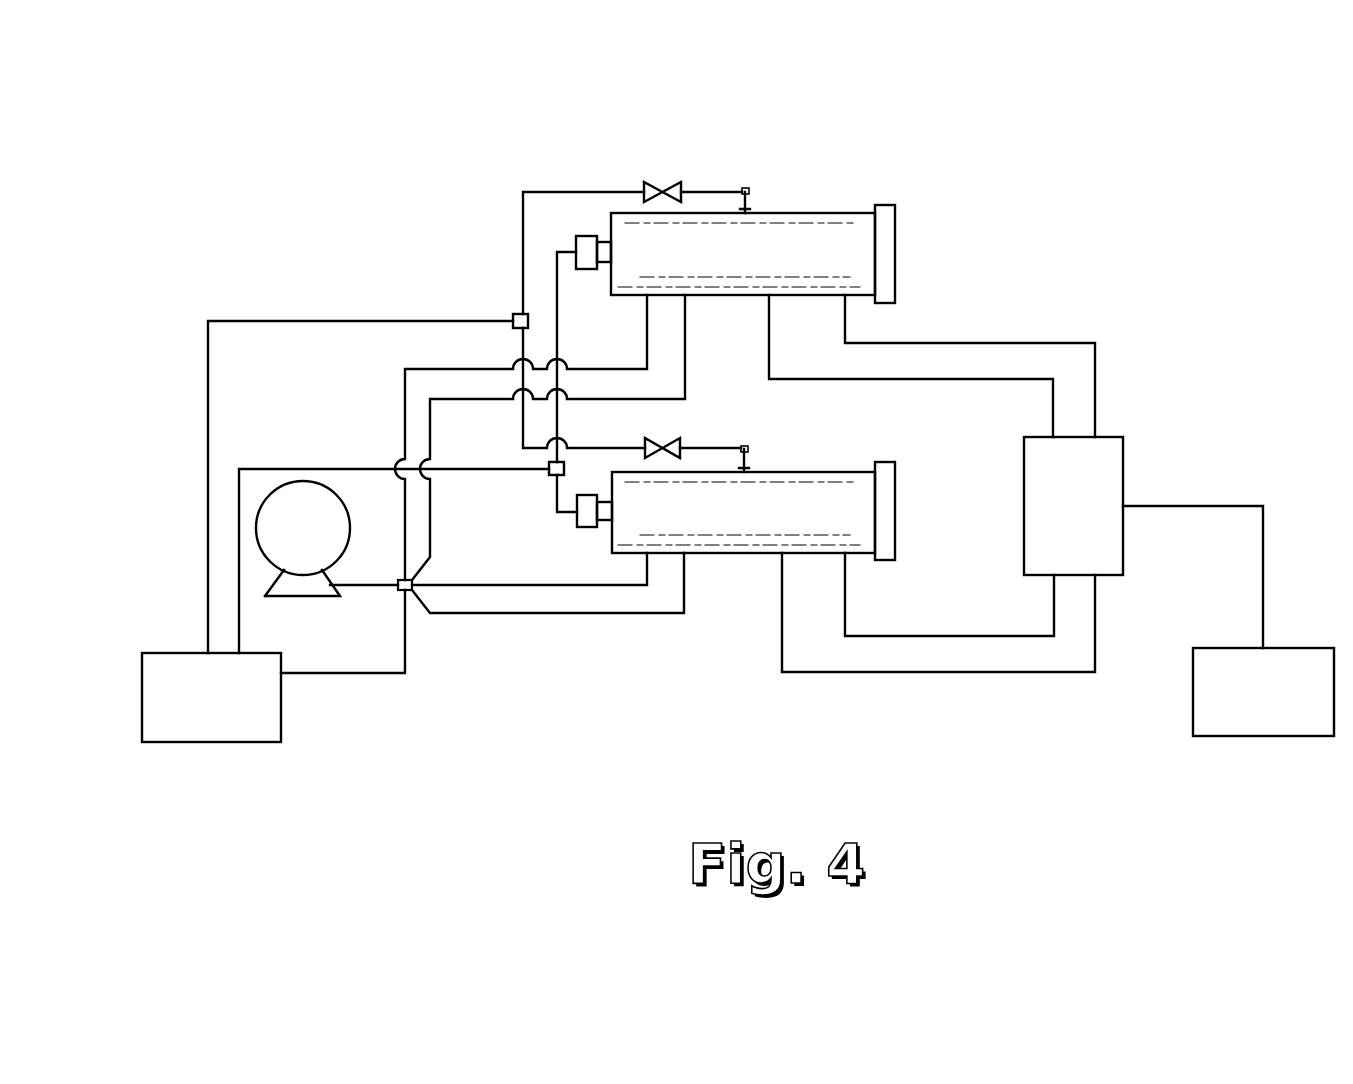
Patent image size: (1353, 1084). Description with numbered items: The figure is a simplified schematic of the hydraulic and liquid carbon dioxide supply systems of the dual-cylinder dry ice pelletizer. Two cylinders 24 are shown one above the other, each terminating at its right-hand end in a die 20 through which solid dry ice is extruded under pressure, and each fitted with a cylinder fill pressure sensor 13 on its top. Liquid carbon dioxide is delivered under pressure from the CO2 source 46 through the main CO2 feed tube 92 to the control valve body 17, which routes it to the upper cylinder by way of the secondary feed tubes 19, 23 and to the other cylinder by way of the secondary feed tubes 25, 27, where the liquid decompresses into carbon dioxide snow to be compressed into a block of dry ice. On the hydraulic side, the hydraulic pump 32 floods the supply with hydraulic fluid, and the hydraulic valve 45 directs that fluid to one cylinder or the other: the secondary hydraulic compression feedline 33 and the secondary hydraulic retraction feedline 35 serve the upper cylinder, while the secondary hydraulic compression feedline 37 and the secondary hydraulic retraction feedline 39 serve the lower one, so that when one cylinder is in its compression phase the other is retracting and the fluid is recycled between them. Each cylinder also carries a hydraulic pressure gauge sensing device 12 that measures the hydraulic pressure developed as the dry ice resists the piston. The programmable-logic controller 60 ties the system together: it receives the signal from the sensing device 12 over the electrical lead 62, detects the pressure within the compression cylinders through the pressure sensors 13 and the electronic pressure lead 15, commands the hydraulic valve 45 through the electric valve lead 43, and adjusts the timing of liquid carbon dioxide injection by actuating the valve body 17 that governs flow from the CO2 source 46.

The hydraulic pressure gauge sensing device 12 is at (587, 241).
The cylinder fill pressure sensor 13 is at (754, 210).
The electronic pressure lead 15 is at (370, 319).
The control valve body 17 is at (1056, 519).
The secondary feed tube 19 is at (990, 382).
The die 20 is at (896, 259).
The secondary feed tube 23 is at (965, 342).
The cylinder 24 is at (735, 266).
The secondary feed tube 25 is at (930, 635).
The secondary feed tube 27 is at (973, 674).
The hydraulic pump 32 is at (288, 541).
The secondary hydraulic compression feedline 33 is at (403, 432).
The secondary hydraulic retraction feedline 35 is at (686, 354).
The secondary hydraulic compression feedline 37 is at (521, 584).
The secondary hydraulic retraction feedline 39 is at (521, 614).
The electric valve lead 43 is at (347, 674).
The hydraulic valve 45 is at (397, 592).
The CO2 source 46 is at (1249, 701).
The programmable-logic controller 60 is at (195, 705).
The electrical lead 62 is at (342, 468).
The main CO2 feed tube 92 is at (1178, 505).